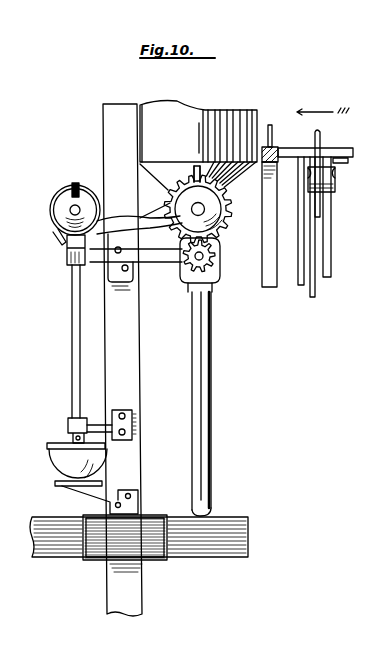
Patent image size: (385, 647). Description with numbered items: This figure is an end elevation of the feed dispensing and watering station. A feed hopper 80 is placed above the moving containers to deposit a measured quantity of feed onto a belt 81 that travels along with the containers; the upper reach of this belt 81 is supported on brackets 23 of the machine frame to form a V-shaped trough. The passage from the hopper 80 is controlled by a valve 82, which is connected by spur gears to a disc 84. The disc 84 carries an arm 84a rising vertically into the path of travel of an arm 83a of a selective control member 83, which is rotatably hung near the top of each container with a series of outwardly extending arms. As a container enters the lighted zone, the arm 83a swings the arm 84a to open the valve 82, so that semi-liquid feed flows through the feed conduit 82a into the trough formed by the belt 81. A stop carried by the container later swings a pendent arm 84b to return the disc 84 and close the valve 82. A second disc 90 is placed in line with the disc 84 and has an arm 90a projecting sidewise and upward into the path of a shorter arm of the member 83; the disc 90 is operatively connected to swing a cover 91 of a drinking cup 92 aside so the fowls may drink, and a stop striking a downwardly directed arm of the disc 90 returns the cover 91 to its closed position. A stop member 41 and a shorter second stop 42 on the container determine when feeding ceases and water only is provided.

The bracket 23 is at (160, 558).
The stop member 41 is at (270, 126).
The second stop 42 is at (270, 148).
The feed hopper 80 is at (220, 112).
The belt 81 is at (230, 552).
The valve 82 is at (216, 276).
The feed conduit 82a is at (204, 405).
The selective control member 83 is at (328, 188).
The arm 83a is at (318, 140).
The disc 84 is at (221, 222).
The arm 84a is at (197, 170).
The pendent arm 84b is at (136, 262).
The second disc 90 is at (50, 213).
The arm 90a is at (74, 188).
The cover 91 is at (60, 443).
The drinking cup 92 is at (53, 473).